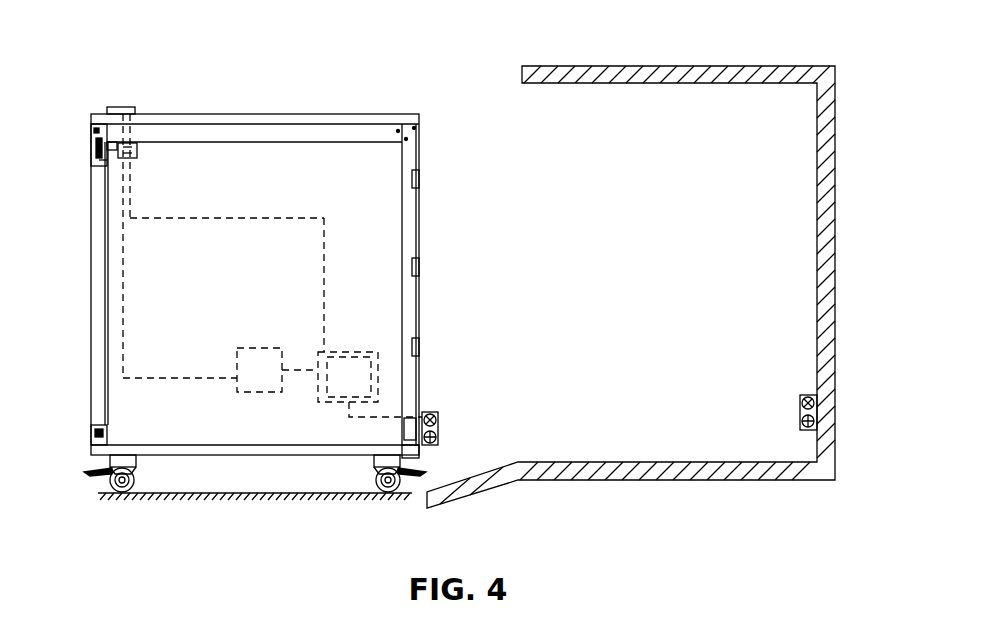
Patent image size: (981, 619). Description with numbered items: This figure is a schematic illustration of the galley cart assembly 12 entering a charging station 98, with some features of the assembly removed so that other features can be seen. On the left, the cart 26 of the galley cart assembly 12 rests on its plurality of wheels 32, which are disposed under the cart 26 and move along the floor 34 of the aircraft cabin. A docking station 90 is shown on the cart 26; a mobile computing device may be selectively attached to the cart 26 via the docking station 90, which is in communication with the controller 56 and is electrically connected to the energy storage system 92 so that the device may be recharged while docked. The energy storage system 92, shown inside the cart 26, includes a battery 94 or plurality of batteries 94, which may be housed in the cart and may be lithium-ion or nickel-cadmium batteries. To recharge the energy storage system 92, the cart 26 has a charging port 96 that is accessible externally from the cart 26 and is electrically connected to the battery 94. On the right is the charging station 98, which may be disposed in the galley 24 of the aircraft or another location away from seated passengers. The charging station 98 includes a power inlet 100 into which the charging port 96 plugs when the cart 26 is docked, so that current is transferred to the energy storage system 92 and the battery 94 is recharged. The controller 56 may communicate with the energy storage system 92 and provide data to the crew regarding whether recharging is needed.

The galley cart assembly 12 is at (134, 58).
The galley 24 is at (762, 38).
The cart 26 is at (97, 281).
The wheels 32 is at (122, 496).
The floor 34 is at (272, 496).
The controller 56 is at (246, 384).
The docking station 90 is at (120, 107).
The energy storage system 92 is at (355, 347).
The battery 94 is at (335, 389).
The charging port 96 is at (432, 412).
The charging station 98 is at (836, 272).
The power inlet 100 is at (800, 410).